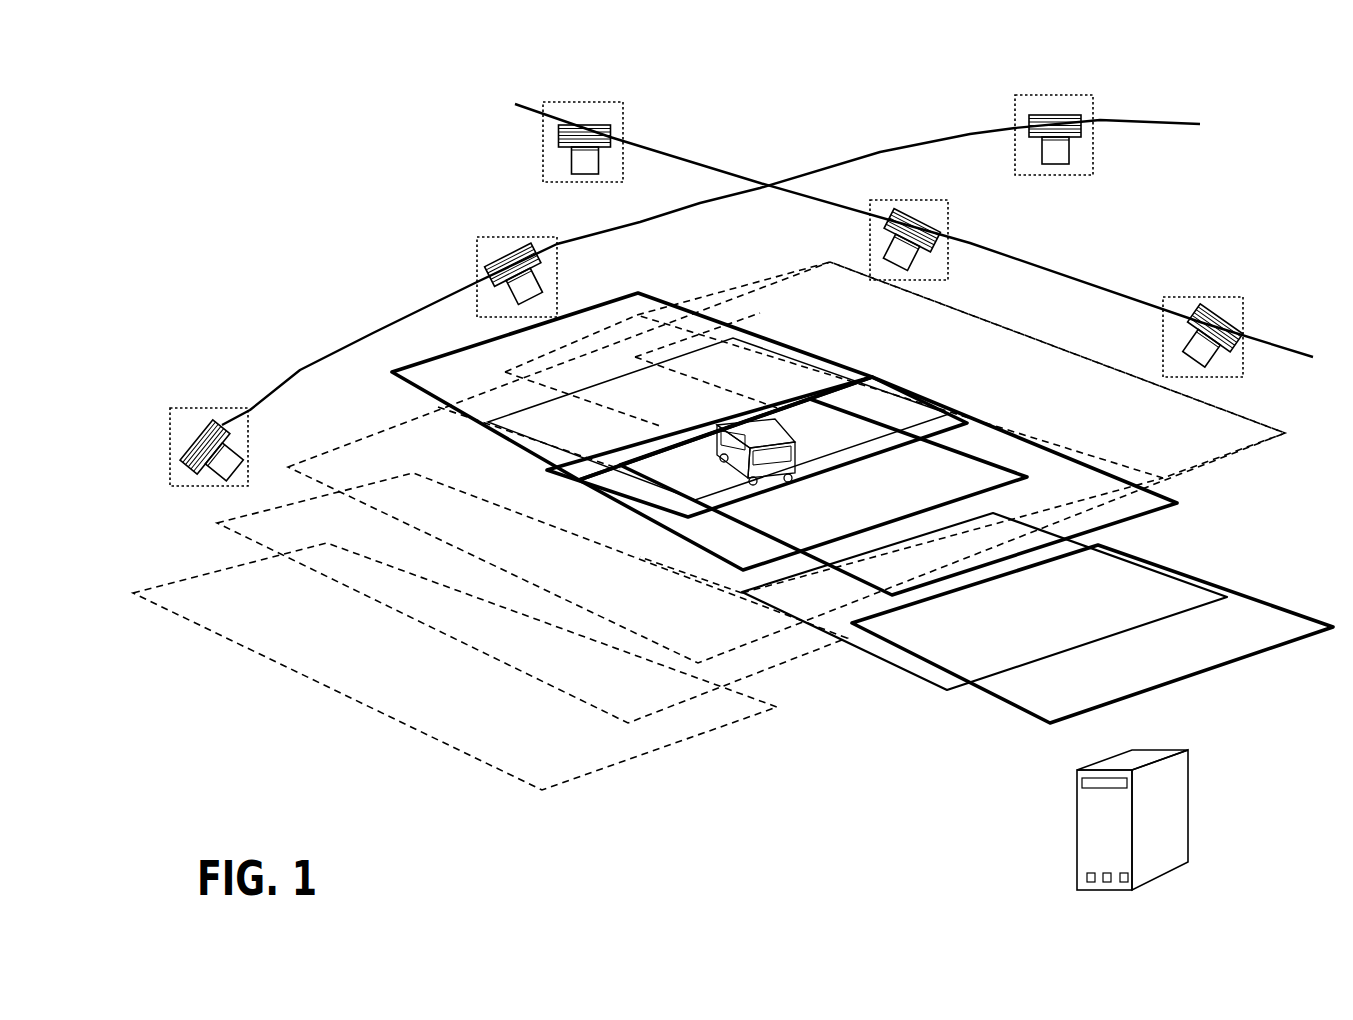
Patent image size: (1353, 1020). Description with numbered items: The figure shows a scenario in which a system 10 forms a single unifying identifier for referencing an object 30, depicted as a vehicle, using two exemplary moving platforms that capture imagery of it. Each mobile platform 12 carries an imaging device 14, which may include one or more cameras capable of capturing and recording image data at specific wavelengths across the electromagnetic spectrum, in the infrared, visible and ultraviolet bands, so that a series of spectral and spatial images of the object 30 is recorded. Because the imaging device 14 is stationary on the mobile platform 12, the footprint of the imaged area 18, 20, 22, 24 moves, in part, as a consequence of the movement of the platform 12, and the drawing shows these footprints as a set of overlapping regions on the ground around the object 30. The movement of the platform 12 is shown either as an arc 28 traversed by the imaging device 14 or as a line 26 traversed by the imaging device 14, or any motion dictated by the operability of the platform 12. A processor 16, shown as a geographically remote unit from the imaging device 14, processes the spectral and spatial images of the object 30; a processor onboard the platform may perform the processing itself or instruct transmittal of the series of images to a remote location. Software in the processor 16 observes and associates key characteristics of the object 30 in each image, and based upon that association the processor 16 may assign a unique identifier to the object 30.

The system 10 is at (249, 121).
The mobile platform 12 is at (190, 406).
The imaging device 14 is at (215, 476).
The processor 16 is at (1192, 808).
The imaged area footprint 18 is at (676, 748).
The imaged area footprint 20 is at (800, 656).
The imaged area footprint 22 is at (905, 393).
The imaged area footprint 24 is at (993, 462).
The line 26 is at (646, 141).
The arc 28 is at (298, 366).
The object 30 is at (757, 430).